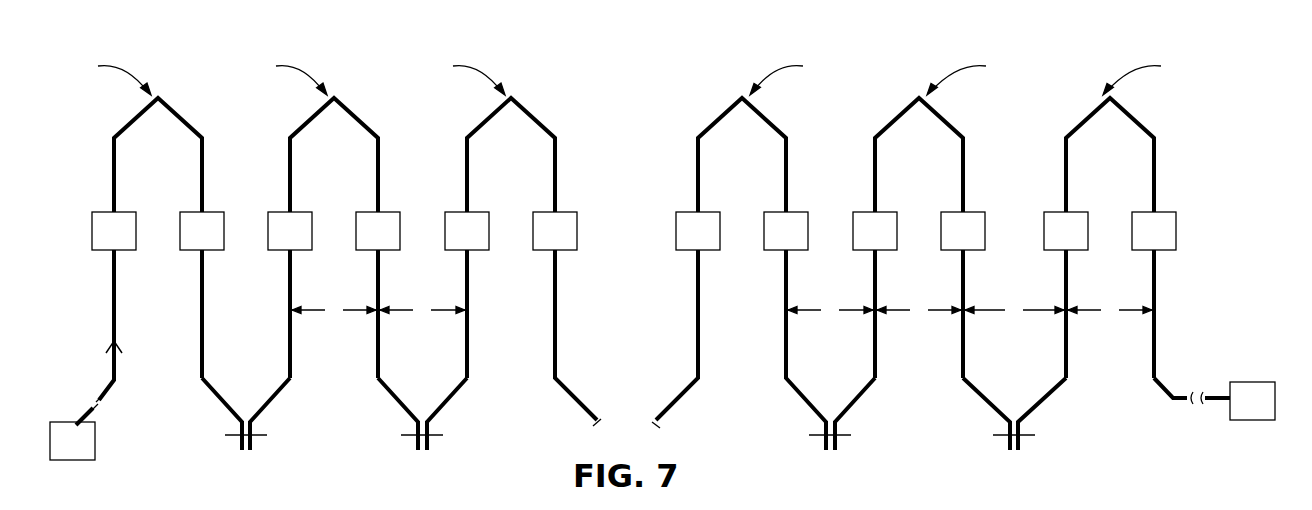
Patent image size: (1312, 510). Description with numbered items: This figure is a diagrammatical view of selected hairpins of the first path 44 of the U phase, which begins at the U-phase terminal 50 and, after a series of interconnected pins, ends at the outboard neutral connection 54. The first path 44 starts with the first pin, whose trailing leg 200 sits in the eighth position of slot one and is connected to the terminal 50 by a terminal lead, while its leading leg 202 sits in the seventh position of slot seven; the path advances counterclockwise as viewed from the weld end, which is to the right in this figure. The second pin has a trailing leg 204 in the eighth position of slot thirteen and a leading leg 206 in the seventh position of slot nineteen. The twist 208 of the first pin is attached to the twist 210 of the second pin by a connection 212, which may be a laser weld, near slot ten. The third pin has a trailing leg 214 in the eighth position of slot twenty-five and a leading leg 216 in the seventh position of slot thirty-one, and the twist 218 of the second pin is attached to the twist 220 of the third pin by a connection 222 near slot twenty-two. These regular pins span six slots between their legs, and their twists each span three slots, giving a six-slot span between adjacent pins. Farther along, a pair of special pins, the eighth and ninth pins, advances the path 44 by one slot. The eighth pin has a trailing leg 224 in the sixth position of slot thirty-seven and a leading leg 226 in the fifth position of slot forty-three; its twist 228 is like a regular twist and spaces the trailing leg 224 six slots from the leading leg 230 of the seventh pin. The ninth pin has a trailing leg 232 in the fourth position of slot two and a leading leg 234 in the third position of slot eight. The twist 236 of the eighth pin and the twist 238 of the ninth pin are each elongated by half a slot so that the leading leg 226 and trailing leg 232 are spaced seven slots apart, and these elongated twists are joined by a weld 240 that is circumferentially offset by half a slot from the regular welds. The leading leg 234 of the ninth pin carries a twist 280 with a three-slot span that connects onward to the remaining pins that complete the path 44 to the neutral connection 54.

The first path 44 is at (1195, 100).
The U-phase terminal 50 is at (56, 421).
The outboard neutral connection 54 is at (1248, 382).
The trailing leg 200 is at (112, 320).
The leading leg 202 is at (200, 366).
The trailing leg 204 is at (288, 320).
The leading leg 206 is at (380, 366).
The twist 208 is at (222, 403).
The twist 210 is at (291, 388).
The connection 212 is at (260, 458).
The trailing leg 214 is at (469, 322).
The leading leg 216 is at (557, 366).
The twist 218 is at (407, 417).
The twist 220 is at (463, 390).
The connection 222 is at (435, 458).
The trailing leg 224 is at (877, 366).
The leading leg 226 is at (965, 366).
The twist 228 is at (872, 390).
The leading leg 230 is at (788, 366).
The trailing leg 232 is at (1068, 366).
The leading leg 234 is at (1156, 366).
The twist 236 is at (1000, 418).
The twist 238 is at (1030, 390).
The weld 240 is at (1028, 458).
The twist 280 is at (1160, 387).